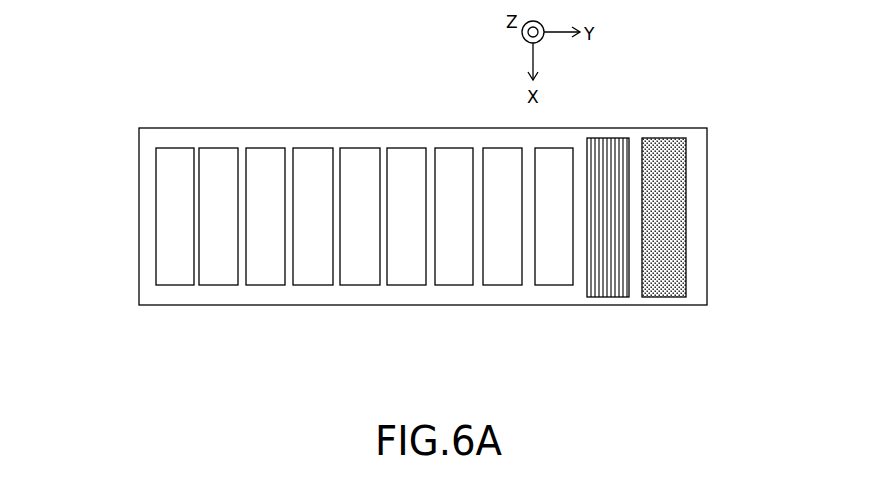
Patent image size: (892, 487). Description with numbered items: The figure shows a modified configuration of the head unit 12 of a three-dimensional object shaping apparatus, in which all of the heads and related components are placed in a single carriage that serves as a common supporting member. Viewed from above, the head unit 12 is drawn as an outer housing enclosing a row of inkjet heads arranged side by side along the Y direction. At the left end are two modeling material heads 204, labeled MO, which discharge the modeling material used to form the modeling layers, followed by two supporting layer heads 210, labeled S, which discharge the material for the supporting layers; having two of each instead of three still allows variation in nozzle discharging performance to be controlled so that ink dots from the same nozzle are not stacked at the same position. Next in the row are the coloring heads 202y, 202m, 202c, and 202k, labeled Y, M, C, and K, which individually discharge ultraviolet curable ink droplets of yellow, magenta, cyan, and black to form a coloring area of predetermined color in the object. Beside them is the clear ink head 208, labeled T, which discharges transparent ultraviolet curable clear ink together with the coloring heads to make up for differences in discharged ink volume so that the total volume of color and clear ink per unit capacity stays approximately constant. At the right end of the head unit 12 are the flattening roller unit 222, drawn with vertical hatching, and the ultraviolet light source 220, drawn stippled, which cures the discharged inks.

The head unit 12 is at (684, 80).
The modeling material head 204 is at (175, 285).
The supporting layer head 210 is at (263, 285).
The coloring head 202y is at (359, 285).
The coloring head 202m is at (406, 285).
The coloring head 202c is at (452, 285).
The coloring head 202k is at (500, 285).
The clear ink head 208 is at (553, 285).
The flattening roller unit 222 is at (607, 297).
The ultraviolet light source 220 is at (665, 297).